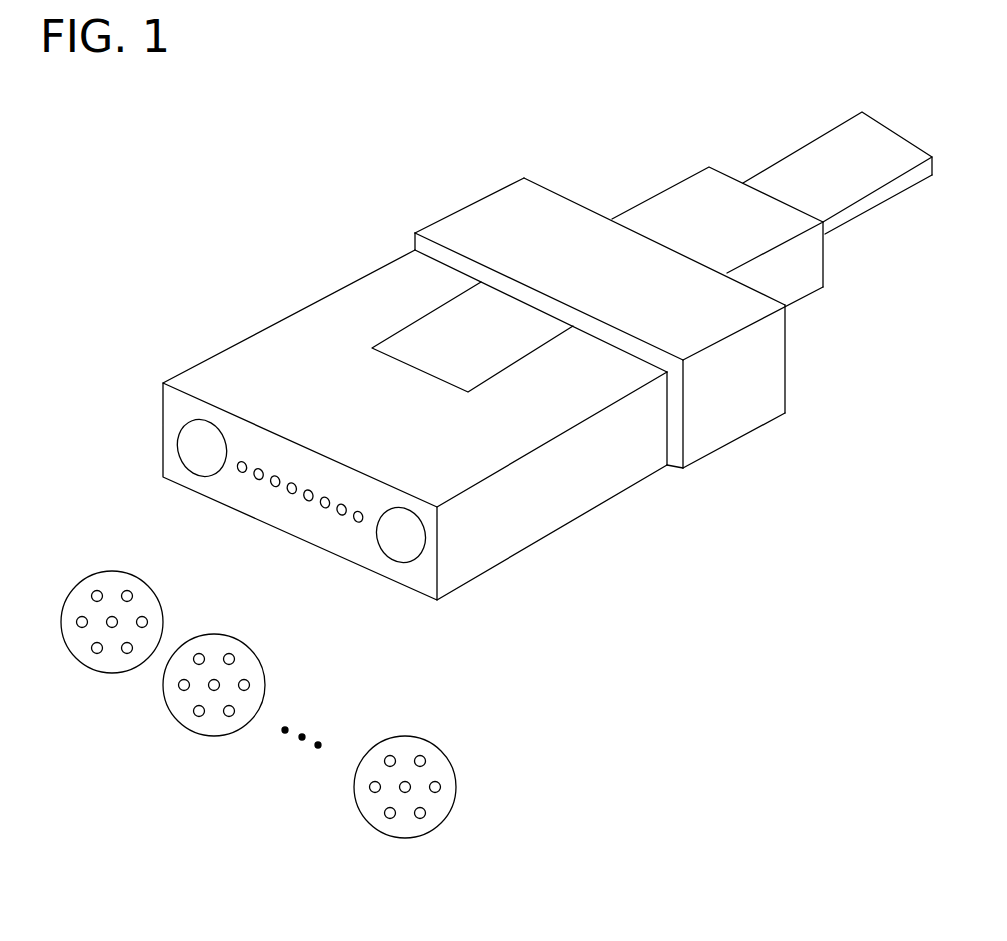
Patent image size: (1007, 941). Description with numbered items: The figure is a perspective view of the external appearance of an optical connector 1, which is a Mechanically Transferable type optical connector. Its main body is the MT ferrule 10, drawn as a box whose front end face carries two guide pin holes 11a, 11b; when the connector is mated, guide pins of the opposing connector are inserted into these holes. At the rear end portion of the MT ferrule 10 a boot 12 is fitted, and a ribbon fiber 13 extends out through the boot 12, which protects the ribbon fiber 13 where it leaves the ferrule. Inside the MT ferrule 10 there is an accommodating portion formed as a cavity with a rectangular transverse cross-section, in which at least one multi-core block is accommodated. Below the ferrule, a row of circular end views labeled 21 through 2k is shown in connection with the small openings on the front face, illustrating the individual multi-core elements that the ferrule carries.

The optical connector 1 is at (409, 148).
The MT ferrule 10 is at (350, 304).
The guide pin hole 11a is at (188, 438).
The guide pin hole 11b is at (410, 537).
The boot 12 is at (660, 213).
The ribbon fiber 13 is at (805, 158).
The multicore optical fiber 21 is at (237, 472).
The multicore optical fiber 2k is at (447, 752).